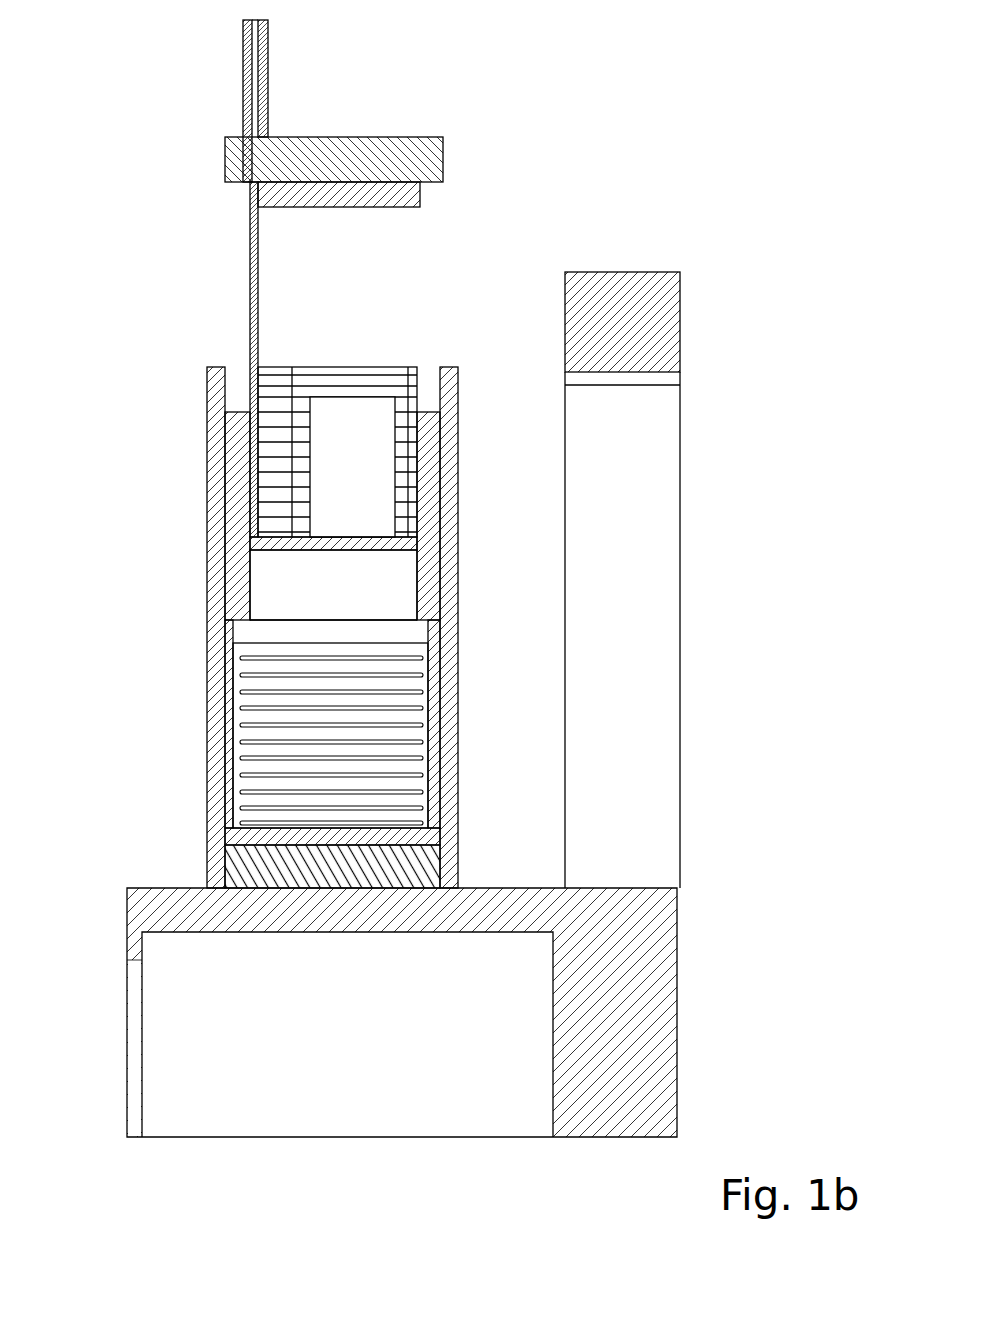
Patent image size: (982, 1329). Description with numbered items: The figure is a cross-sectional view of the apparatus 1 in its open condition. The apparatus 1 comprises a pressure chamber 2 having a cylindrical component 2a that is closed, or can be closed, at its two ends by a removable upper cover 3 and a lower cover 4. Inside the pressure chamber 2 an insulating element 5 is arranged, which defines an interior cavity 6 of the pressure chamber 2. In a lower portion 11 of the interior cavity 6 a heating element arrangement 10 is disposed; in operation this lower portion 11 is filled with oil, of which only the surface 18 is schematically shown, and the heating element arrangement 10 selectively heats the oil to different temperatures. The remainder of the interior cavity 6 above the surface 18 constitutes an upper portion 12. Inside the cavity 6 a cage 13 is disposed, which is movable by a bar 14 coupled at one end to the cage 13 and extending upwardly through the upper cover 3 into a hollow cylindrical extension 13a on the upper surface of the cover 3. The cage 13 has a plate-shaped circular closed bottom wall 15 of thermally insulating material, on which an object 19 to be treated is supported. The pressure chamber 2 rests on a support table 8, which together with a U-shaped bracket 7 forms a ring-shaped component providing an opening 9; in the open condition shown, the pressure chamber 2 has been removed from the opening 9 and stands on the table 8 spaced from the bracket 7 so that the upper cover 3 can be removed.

The apparatus 1 is at (120, 323).
The pressure chamber 2 is at (318, 627).
The cylindrical component 2a is at (210, 518).
The upper cover 3 is at (430, 152).
The lower cover 4 is at (235, 868).
The insulating element 5 is at (238, 433).
The interior cavity 6 is at (338, 598).
The U-shaped bracket 7 is at (658, 307).
The support table 8 is at (653, 990).
The opening 9 is at (680, 372).
The heating element arrangement 10 is at (245, 678).
The lower portion 11 is at (410, 730).
The upper portion 12 is at (405, 578).
The cage 13 is at (405, 388).
The extension 13a is at (268, 52).
The bar 14 is at (250, 253).
The bottom wall 15 is at (255, 545).
The surface of the oil 18 is at (420, 635).
The object 19 is at (356, 405).